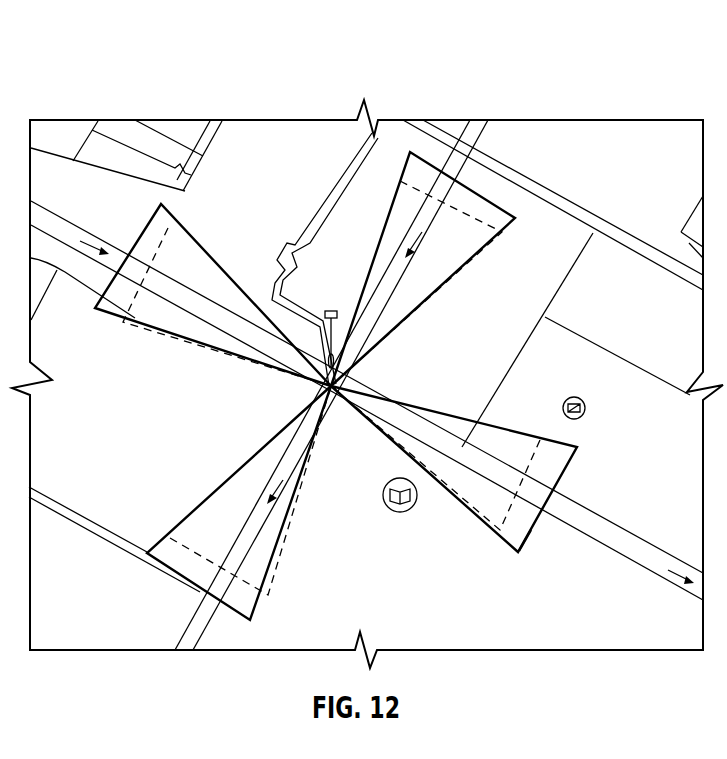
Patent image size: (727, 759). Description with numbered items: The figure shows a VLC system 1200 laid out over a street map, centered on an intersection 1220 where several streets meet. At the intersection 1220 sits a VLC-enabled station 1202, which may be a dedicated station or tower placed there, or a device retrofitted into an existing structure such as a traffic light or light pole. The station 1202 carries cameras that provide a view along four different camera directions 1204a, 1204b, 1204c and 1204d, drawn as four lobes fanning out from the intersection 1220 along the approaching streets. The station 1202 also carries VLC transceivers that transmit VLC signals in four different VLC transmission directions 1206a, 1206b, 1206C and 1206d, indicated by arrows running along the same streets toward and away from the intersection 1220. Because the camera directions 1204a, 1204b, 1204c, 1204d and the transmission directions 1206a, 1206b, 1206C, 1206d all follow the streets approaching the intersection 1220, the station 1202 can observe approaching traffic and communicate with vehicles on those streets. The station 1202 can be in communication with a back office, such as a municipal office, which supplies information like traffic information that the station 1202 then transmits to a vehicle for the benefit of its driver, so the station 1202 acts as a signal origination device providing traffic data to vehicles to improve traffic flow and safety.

The VLC system 1200 is at (104, 64).
The VLC-enabled station 1202 is at (330, 307).
The camera direction 1204a is at (468, 272).
The camera direction 1204b is at (481, 533).
The camera direction 1204c is at (277, 570).
The camera direction 1204d is at (193, 345).
The VLC transmission direction 1206a is at (497, 200).
The VLC transmission direction 1206b is at (533, 526).
The VLC transmission direction 1206C is at (164, 569).
The VLC transmission direction 1206d is at (123, 256).
The intersection 1220 is at (338, 407).